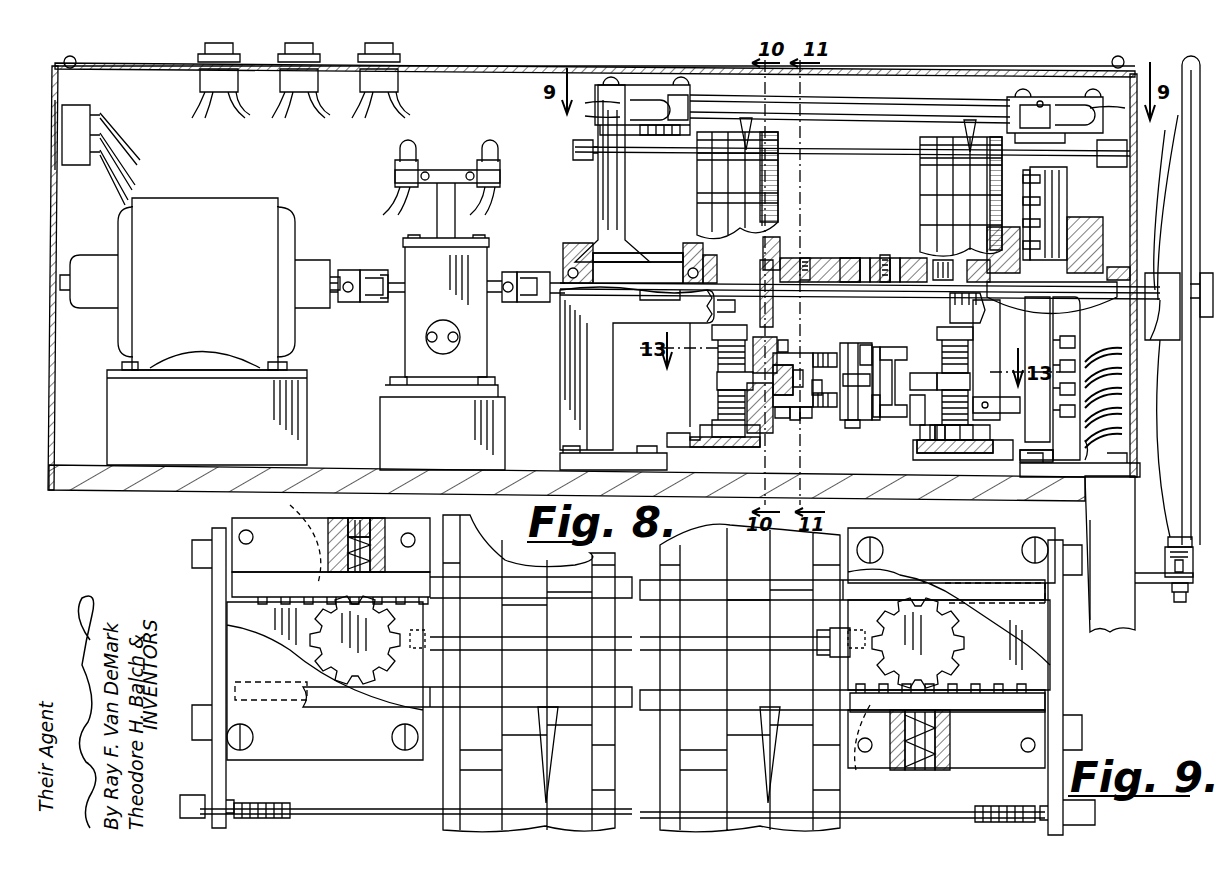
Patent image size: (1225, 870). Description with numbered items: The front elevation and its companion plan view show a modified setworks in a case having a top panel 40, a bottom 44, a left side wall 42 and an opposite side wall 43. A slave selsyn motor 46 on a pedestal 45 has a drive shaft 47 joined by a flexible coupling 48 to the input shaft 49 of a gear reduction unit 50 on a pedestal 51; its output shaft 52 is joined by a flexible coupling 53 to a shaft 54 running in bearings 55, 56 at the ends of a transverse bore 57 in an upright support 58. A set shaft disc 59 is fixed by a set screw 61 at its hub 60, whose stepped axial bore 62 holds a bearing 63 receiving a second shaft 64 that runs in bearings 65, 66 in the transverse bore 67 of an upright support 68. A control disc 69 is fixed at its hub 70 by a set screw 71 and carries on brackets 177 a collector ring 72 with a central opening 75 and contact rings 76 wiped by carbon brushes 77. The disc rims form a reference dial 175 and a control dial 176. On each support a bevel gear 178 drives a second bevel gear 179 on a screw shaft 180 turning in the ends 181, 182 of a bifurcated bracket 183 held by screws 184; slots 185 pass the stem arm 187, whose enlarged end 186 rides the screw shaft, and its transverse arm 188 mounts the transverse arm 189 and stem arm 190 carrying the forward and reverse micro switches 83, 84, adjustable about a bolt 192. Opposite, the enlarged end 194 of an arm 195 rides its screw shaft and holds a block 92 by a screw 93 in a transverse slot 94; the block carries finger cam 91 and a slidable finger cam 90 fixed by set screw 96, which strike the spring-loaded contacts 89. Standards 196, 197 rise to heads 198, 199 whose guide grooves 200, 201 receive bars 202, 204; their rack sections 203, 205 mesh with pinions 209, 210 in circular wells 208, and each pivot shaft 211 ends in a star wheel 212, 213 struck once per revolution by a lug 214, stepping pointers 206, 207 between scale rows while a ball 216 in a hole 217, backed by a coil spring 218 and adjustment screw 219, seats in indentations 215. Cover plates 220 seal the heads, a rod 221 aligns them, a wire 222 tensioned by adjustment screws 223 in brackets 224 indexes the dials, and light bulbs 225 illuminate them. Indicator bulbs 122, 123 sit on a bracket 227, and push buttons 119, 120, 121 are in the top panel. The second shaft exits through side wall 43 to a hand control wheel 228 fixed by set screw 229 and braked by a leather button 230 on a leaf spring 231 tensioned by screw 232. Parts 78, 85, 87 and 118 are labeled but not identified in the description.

In FIG. 8, the top panel 40 is at (432, 66).
In FIG. 8, the left side wall 42 is at (56, 377).
In FIG. 8, the side wall 43 is at (1139, 542).
In FIG. 8, the bottom 44 is at (230, 485).
In FIG. 8, the pedestal 45 is at (296, 441).
In FIG. 8, the slave selsyn motor 46 is at (200, 284).
In FIG. 8, the drive shaft 47 is at (335, 302).
In FIG. 8, the flexible coupling 48 is at (370, 302).
In FIG. 8, the input shaft 49 is at (392, 302).
In FIG. 8, the gear reduction unit 50 is at (446, 306).
In FIG. 8, the pedestal 51 is at (380, 403).
In FIG. 8, the output shaft 52 is at (505, 302).
In FIG. 8, the flexible coupling 53 is at (530, 272).
In FIG. 8, the shaft 54 is at (550, 302).
In FIG. 8, the bearing 55 is at (576, 245).
In FIG. 8, the bearing 56 is at (680, 253).
In FIG. 8, the transverse bore 57 is at (648, 253).
In FIG. 8, the upright support 58 is at (570, 419).
In FIG. 8, the set shaft disc 59 is at (773, 258).
In FIG. 8, the hub 60 is at (806, 258).
In FIG. 8, the set screw 61 is at (795, 258).
In FIG. 8, the stepped axial bore 62 is at (843, 258).
In FIG. 8, the bearing 63 is at (864, 258).
In FIG. 8, the second shaft 64 is at (872, 260).
In FIG. 8, the bearing 65 is at (985, 290).
In FIG. 8, the bearing 66 is at (1116, 268).
In FIG. 8, the transverse bore 67 is at (1045, 297).
In FIG. 8, the upright support 68 is at (1095, 445).
In FIG. 8, the control disc 69 is at (908, 258).
In FIG. 8, the hub 70 is at (885, 256).
In FIG. 8, the set screw 71 is at (894, 258).
In FIG. 8, the collector ring 72 is at (1040, 462).
In FIG. 8, the central opening 75 is at (1010, 267).
In FIG. 8, the contact rings 76 is at (1067, 191).
In FIG. 8, the carbon brushes 77 is at (1080, 375).
In FIG. 8, the plate 78 is at (1023, 201).
In FIG. 8, the forward micro switch 83 is at (852, 428).
In FIG. 8, the reverse micro switch 84 is at (855, 343).
In FIG. 8, the pin 85 is at (890, 400).
In FIG. 8, the screw 87 is at (822, 353).
In FIG. 8, the spring-loaded contacts 89 is at (818, 395).
In FIG. 8, the finger cam 90 is at (806, 418).
In FIG. 8, the finger cam 91 is at (793, 352).
In FIG. 8, the block 92 is at (783, 353).
In FIG. 8, the screw 93 is at (780, 418).
In FIG. 8, the transverse slot 94 is at (803, 381).
In FIG. 8, the set screw 96 is at (795, 420).
In FIG. 8, the terminal block 118 is at (80, 109).
In FIG. 8, the forward push button 119 is at (200, 49).
In FIG. 8, the reverse push button 120 is at (285, 49).
In FIG. 8, the safety stop push button 121 is at (365, 49).
In FIG. 8, the indicator bulb 122 is at (412, 151).
In FIG. 8, the indicator bulb 123 is at (494, 151).
In FIG. 8, the reference dial 175 is at (720, 449).
In FIG. 9, the reference dial 175 is at (443, 819).
In FIG. 8, the control dial 176 is at (970, 458).
In FIG. 9, the control dial 176 is at (840, 823).
In FIG. 8, the brackets 177 is at (996, 405).
In FIG. 8, the bevel gear 178 is at (955, 278).
In FIG. 8, the second bevel gear 179 is at (952, 308).
In FIG. 8, the screw shaft 180 is at (968, 356).
In FIG. 8, the end of bifurcated bracket 181 is at (985, 331).
In FIG. 8, the end of bifurcated bracket 182 is at (922, 440).
In FIG. 8, the bifurcated bracket 183 is at (937, 440).
In FIG. 8, the screws 184 is at (950, 432).
In FIG. 8, the elongated slots 185 is at (915, 415).
In FIG. 8, the enlarged end 186 is at (971, 387).
In FIG. 8, the stem arm 187 is at (928, 383).
In FIG. 8, the transverse arm 188 is at (897, 347).
In FIG. 8, the transverse arm 189 is at (882, 368).
In FIG. 8, the stem arm 190 is at (856, 380).
In FIG. 8, the second bolt 192 is at (874, 420).
In FIG. 8, the enlarged end 194 is at (717, 380).
In FIG. 8, the arm 195 is at (718, 406).
In FIG. 8, the standard 196 is at (598, 191).
In FIG. 8, the standard 197 is at (1095, 229).
In FIG. 8, the head 198 is at (663, 86).
In FIG. 9, the head 198 is at (232, 613).
In FIG. 8, the head 199 is at (1012, 97).
In FIG. 9, the head 199 is at (1050, 677).
In FIG. 9, the guide groove 200 is at (232, 686).
In FIG. 9, the guide groove 201 is at (232, 583).
In FIG. 9, the elongated bar 202 is at (737, 588).
In FIG. 9, the rack section 203 is at (283, 581).
In FIG. 8, the second bar 204 is at (845, 107).
In FIG. 9, the second bar 204 is at (674, 696).
In FIG. 9, the end rack section 205 is at (990, 716).
In FIG. 8, the pointer 206 is at (752, 136).
In FIG. 9, the pointer 206 is at (545, 756).
In FIG. 8, the pointer 207 is at (966, 139).
In FIG. 9, the pointer 207 is at (766, 756).
In FIG. 9, the circular well 208 is at (637, 657).
In FIG. 9, the pinion 209 is at (355, 640).
In FIG. 9, the pinion 210 is at (918, 643).
In FIG. 8, the pivot shaft 211 is at (669, 108).
In FIG. 8, the star wheel 212 is at (666, 136).
In FIG. 8, the star wheel 213 is at (1030, 117).
In FIG. 8, the lug 214 is at (668, 440).
In FIG. 9, the indentations 215 is at (572, 642).
In FIG. 9, the ball 216 is at (345, 572).
In FIG. 9, the hole 217 is at (378, 545).
In FIG. 9, the coil spring 218 is at (372, 553).
In FIG. 8, the adjustment screw 219 is at (1040, 100).
In FIG. 9, the adjustment screw 219 is at (352, 519).
In FIG. 9, the cover plates 220 is at (985, 533).
In FIG. 8, the rod 221 is at (812, 118).
In FIG. 9, the rod 221 is at (490, 650).
In FIG. 8, the wire 222 is at (820, 157).
In FIG. 9, the wire 222 is at (405, 809).
In FIG. 9, the adjustment screws 223 is at (285, 814).
In FIG. 9, the brackets 224 is at (226, 771).
In FIG. 8, the light bulb 225 is at (645, 100).
In FIG. 8, the bracket 227 is at (443, 180).
In FIG. 8, the hand control wheel 228 is at (1180, 113).
In FIG. 8, the set screw 229 is at (1124, 398).
In FIG. 8, the leather button 230 is at (1172, 546).
In FIG. 8, the leaf spring 231 is at (1165, 558).
In FIG. 8, the screw 232 is at (1178, 603).